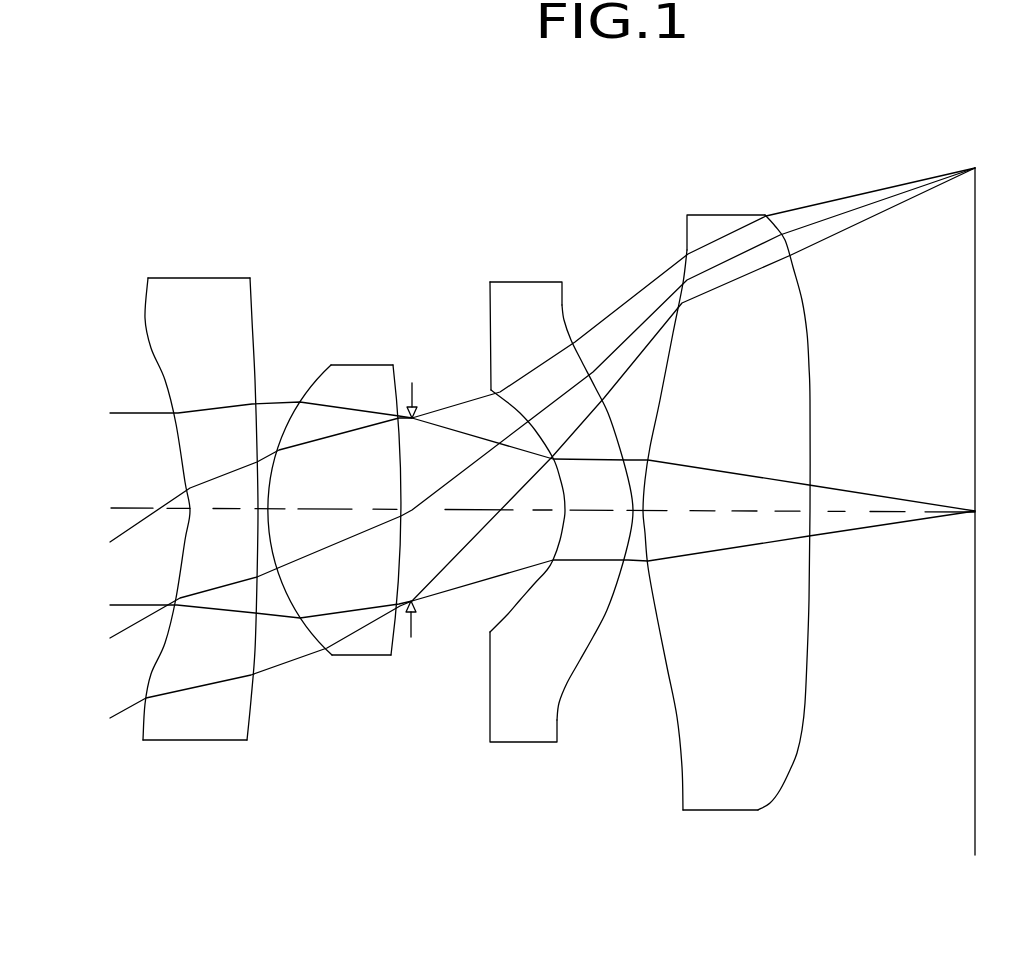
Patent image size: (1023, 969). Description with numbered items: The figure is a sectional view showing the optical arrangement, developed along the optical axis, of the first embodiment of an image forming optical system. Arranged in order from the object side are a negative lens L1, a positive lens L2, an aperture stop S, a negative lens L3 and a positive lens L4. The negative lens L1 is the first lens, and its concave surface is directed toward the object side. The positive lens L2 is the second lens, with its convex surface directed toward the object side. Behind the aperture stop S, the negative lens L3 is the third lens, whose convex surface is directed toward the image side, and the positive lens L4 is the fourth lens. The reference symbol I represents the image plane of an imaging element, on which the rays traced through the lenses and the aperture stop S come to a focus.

The negative lens L1 is at (200, 277).
The positive lens L2 is at (365, 365).
The aperture stop S is at (412, 383).
The negative lens L3 is at (528, 282).
The positive lens L4 is at (723, 213).
The image plane I is at (976, 362).